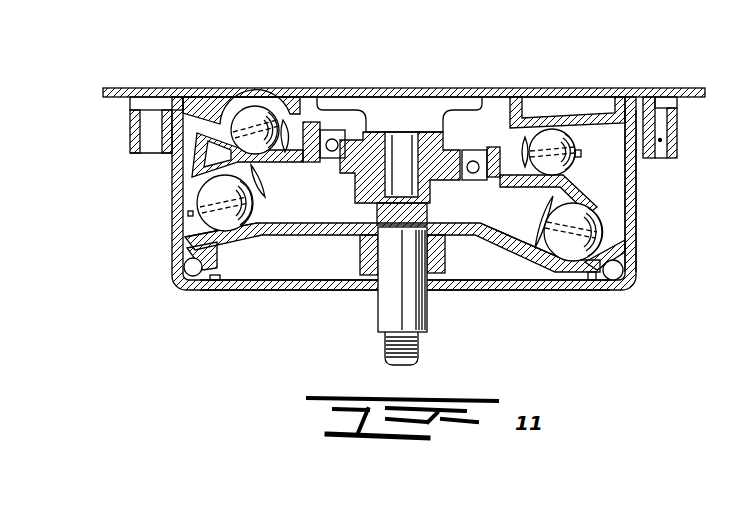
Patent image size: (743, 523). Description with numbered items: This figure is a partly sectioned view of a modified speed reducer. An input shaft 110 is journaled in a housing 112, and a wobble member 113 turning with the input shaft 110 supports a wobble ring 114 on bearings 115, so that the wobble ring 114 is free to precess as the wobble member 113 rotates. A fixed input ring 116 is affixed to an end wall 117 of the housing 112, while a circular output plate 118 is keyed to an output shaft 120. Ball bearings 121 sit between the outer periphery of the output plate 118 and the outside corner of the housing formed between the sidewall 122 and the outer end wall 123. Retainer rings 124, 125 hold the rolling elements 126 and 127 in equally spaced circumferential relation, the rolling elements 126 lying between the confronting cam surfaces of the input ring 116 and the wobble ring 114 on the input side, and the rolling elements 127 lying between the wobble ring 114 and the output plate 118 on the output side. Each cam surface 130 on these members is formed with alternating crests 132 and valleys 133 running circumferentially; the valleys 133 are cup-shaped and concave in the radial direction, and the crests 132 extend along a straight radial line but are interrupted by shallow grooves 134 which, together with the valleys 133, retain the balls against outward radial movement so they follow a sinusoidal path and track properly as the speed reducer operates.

The input shaft 110 is at (413, 140).
The housing 112 is at (641, 208).
The wobble member 113 is at (463, 152).
The wobble ring 114 is at (253, 160).
The bearings 115 is at (328, 162).
The fixed input ring 116 is at (216, 110).
The end wall 117 is at (313, 88).
The circular output plate 118 is at (196, 238).
The output shaft 120 is at (384, 313).
The ball bearings 121 is at (190, 271).
The sidewall 122 is at (637, 234).
The outer end wall 123 is at (503, 290).
The retainer ring 124 is at (215, 112).
The retainer ring 125 is at (190, 215).
The rolling elements 126 is at (257, 118).
The rolling elements 127 is at (200, 202).
The cam surface 130 is at (612, 200).
The crests 132 is at (240, 250).
The valleys 133 is at (576, 268).
The grooves 134 is at (228, 252).